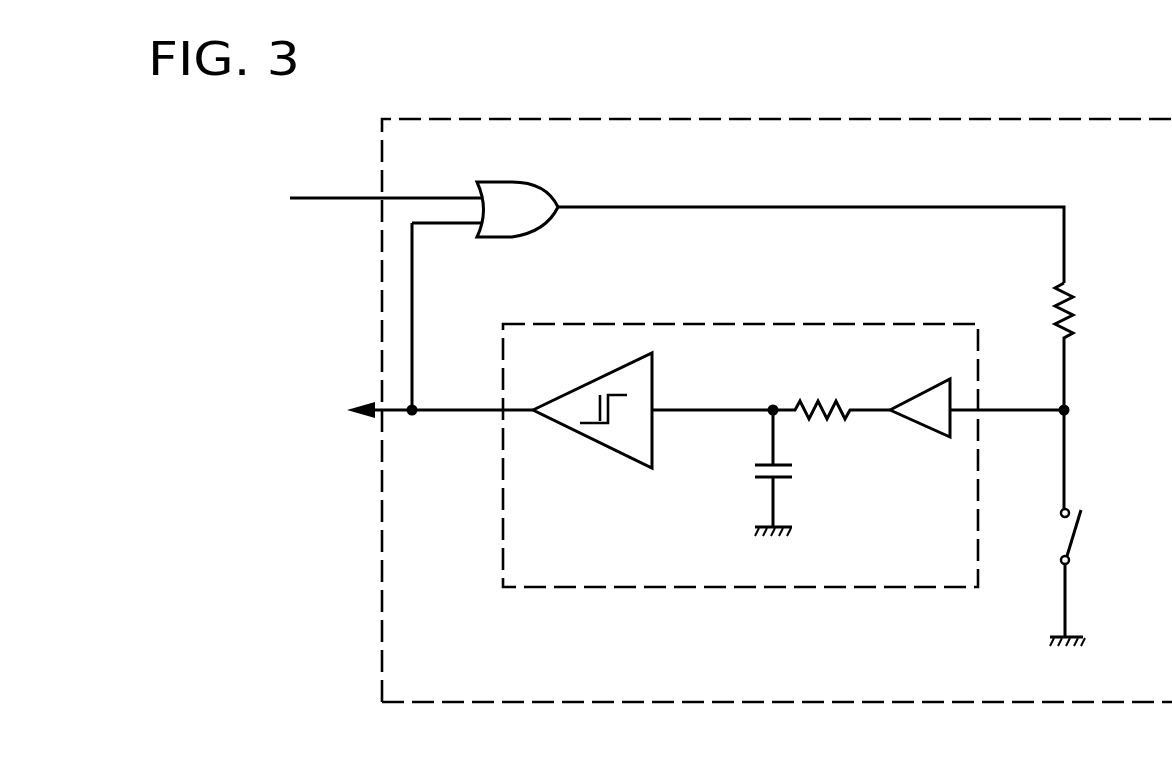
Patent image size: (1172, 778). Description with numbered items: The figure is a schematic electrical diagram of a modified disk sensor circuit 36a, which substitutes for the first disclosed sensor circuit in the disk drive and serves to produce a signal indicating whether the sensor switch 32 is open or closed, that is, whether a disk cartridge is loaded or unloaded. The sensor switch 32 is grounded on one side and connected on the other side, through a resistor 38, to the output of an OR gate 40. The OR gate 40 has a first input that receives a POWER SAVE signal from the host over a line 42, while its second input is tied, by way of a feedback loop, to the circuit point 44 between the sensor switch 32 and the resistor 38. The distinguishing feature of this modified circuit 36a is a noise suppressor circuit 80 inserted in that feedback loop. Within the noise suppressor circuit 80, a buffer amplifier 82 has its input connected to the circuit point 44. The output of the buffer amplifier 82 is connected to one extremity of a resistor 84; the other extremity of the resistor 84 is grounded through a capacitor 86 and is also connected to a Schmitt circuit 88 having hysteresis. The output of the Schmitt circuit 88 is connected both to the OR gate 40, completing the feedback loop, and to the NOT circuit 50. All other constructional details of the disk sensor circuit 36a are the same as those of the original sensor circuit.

The modified disk sensor circuit 36a is at (787, 117).
The noise suppressor circuit 80 is at (798, 321).
The line 42 is at (320, 196).
The OR gate 40 is at (495, 179).
The NOT circuit 50 is at (344, 330).
The Schmitt circuit 88 is at (587, 438).
The capacitor 86 is at (759, 472).
The resistor 84 is at (813, 397).
The buffer amplifier 82 is at (915, 391).
The resistor 38 is at (1068, 306).
The circuit point 44 is at (1070, 410).
The sensor switch 32 is at (1075, 538).